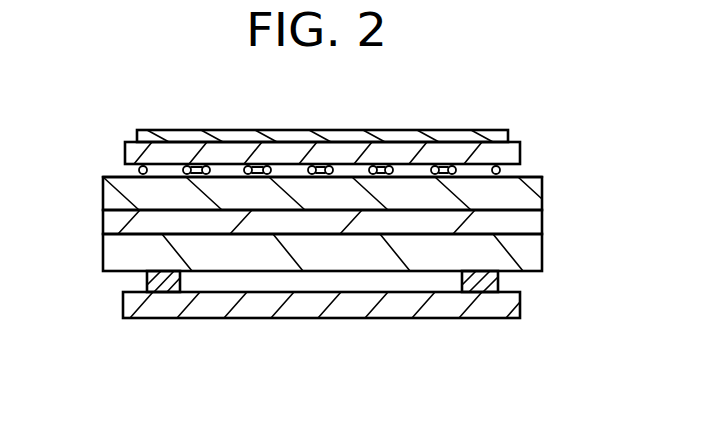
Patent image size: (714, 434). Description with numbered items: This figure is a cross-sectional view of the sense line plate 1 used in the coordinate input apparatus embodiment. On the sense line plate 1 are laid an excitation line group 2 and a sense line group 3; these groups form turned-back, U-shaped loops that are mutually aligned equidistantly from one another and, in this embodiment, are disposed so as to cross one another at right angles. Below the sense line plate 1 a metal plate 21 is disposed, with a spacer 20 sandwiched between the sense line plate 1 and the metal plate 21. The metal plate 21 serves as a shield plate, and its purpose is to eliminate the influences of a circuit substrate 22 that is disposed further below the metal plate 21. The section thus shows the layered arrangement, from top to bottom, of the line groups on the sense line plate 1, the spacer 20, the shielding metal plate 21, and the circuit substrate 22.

The sense line plate 1 is at (515, 155).
The excitation line group 2 is at (150, 133).
The sense line group 3 is at (138, 168).
The spacer 20 is at (542, 200).
The metal plate 21 is at (530, 224).
The circuit substrate 22 is at (520, 307).